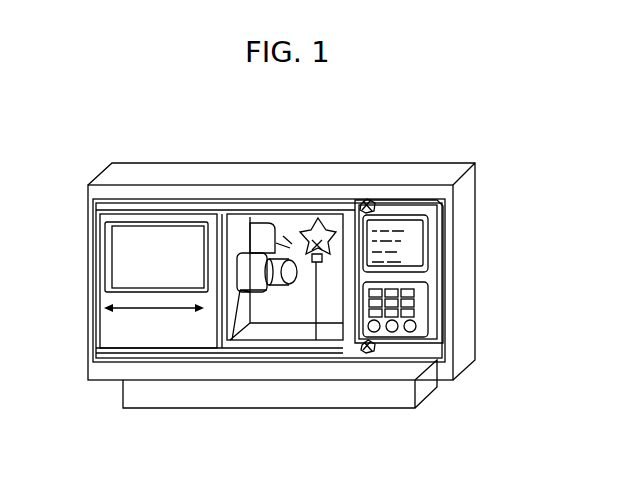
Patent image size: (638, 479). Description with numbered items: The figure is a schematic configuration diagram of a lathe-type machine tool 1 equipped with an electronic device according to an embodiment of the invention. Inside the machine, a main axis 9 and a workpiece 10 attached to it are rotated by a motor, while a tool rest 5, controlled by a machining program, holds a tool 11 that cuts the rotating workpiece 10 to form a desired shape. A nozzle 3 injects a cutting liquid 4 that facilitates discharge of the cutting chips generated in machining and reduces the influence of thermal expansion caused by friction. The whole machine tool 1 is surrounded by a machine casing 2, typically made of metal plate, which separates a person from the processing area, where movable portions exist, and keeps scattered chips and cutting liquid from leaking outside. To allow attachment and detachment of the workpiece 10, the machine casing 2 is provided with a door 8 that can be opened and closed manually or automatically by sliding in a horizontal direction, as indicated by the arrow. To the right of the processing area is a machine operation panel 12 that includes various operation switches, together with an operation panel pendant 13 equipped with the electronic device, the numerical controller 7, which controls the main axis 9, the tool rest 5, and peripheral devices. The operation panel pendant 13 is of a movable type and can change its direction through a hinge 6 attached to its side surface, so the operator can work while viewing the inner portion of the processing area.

The machine tool 1 is at (73, 94).
The machine casing 2 is at (118, 162).
The nozzle 3 is at (270, 226).
The cutting liquid 4 is at (283, 243).
The tool rest 5 is at (334, 220).
The hinge 6 is at (366, 205).
The numerical controller 7 is at (430, 247).
The door 8 is at (122, 337).
The main axis 9 is at (247, 290).
The workpiece 10 is at (278, 287).
The tool 11 is at (316, 340).
The machine operation panel 12 is at (392, 340).
The operation panel pendant 13 is at (422, 350).